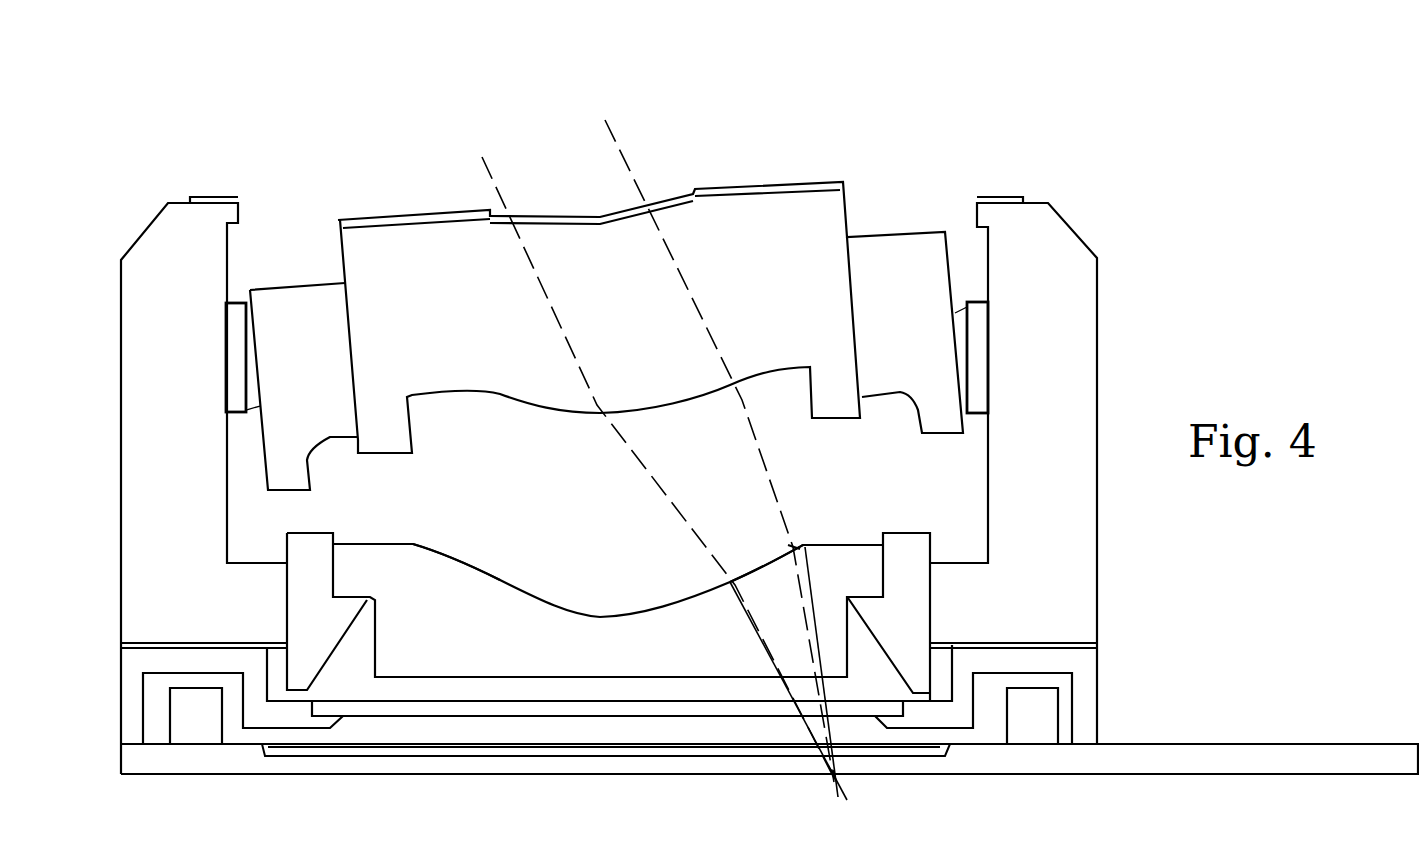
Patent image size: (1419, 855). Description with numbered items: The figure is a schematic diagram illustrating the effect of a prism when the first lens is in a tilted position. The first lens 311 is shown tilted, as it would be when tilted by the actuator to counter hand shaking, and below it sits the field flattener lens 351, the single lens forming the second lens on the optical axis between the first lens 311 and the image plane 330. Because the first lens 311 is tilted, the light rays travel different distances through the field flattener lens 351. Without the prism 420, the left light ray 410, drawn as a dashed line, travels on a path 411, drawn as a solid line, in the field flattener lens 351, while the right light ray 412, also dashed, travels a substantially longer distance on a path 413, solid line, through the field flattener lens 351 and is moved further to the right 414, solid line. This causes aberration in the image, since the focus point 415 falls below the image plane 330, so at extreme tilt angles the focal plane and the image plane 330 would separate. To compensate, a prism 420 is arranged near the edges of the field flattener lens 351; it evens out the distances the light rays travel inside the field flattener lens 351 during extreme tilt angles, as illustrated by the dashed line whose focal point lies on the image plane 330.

The first lens 311 is at (523, 215).
The image plane 330 is at (482, 756).
The field flattener lens 351 is at (493, 588).
The left light ray 410 is at (642, 471).
The path 411 is at (753, 627).
The right light ray 412 is at (762, 462).
The path 413 is at (808, 575).
The shifted light ray position 414 is at (794, 547).
The focus point 415 is at (832, 780).
The prism 420 is at (462, 573).